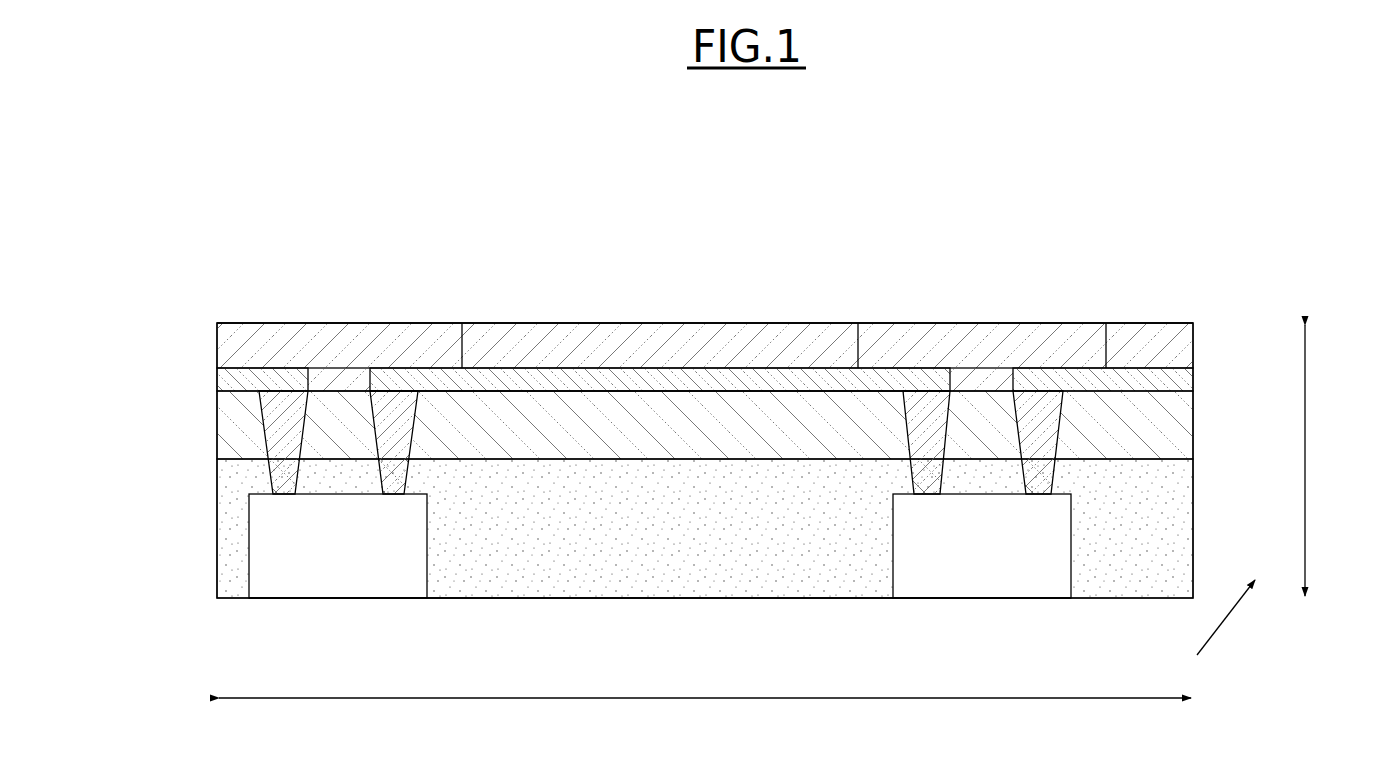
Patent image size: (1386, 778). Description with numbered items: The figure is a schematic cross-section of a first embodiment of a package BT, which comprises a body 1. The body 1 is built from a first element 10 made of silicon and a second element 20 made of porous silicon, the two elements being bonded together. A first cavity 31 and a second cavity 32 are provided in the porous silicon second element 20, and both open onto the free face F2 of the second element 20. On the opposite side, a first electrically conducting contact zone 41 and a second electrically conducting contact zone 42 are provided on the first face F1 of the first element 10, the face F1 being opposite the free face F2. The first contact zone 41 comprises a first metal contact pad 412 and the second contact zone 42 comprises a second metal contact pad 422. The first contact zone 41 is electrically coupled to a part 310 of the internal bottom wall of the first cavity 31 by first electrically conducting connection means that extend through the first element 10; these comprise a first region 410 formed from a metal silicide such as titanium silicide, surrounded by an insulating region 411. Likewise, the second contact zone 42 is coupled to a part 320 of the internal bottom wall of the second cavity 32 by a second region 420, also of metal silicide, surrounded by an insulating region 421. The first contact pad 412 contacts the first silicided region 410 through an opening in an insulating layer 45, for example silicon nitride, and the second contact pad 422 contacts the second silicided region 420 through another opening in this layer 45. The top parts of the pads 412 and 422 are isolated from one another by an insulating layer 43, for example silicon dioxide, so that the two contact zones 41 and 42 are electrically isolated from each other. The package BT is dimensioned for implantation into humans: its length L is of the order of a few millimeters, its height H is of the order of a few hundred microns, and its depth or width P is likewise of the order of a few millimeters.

The body 1 is at (165, 508).
The first element 10 is at (1186, 418).
The second element 20 is at (1188, 525).
The first cavity 31 is at (355, 558).
The second cavity 32 is at (996, 558).
The part of the internal bottom wall of the first cavity 310 is at (323, 497).
The part of the internal bottom wall of the second cavity 320 is at (998, 497).
The first electrically conducting contact zone 41 is at (311, 360).
The first region 410 is at (330, 428).
The insulating region 411 is at (400, 420).
The first metal contact pad 412 is at (325, 359).
The second electrically conducting contact zone 42 is at (955, 360).
The second region 420 is at (983, 420).
The insulating region 421 is at (923, 420).
The second metal contact pad 422 is at (998, 358).
The insulating layer 43 is at (778, 348).
The insulating layer 45 is at (573, 378).
The first face F1 is at (657, 393).
The free face F2 is at (458, 600).
The package BT is at (1198, 268).
The height H is at (1313, 460).
The length L is at (705, 712).
The depth (width) P is at (1226, 617).